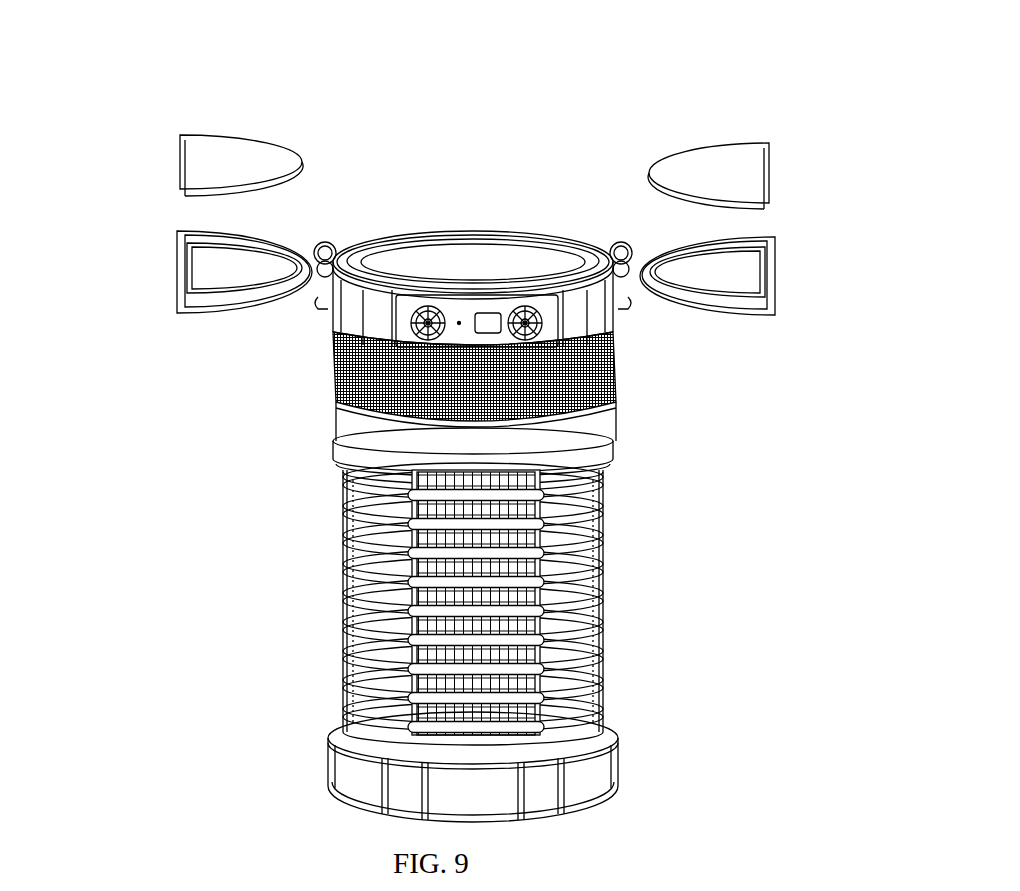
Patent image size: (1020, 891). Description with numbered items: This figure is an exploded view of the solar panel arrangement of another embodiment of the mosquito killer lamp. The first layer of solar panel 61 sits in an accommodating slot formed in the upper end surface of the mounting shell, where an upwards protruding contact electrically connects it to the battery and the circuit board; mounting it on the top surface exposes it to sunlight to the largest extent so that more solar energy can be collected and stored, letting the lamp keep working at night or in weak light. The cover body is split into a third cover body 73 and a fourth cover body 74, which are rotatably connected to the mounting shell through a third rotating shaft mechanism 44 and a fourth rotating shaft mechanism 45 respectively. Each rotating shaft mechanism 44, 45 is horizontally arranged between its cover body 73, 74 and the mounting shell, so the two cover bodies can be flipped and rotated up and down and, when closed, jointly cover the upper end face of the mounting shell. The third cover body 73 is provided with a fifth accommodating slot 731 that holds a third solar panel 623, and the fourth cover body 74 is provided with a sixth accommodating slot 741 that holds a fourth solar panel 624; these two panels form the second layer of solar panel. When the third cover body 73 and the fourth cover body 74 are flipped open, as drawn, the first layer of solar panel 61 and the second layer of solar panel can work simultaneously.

The third rotating shaft mechanism 44 is at (325, 258).
The fourth rotating shaft mechanism 45 is at (621, 245).
The first layer of solar panel 61 is at (460, 253).
The third solar panel 623 is at (208, 163).
The fourth solar panel 624 is at (683, 168).
The third cover body 73 is at (172, 283).
The fifth accommodating slot 731 is at (215, 270).
The fourth cover body 74 is at (780, 267).
The sixth accommodating slot 741 is at (710, 267).